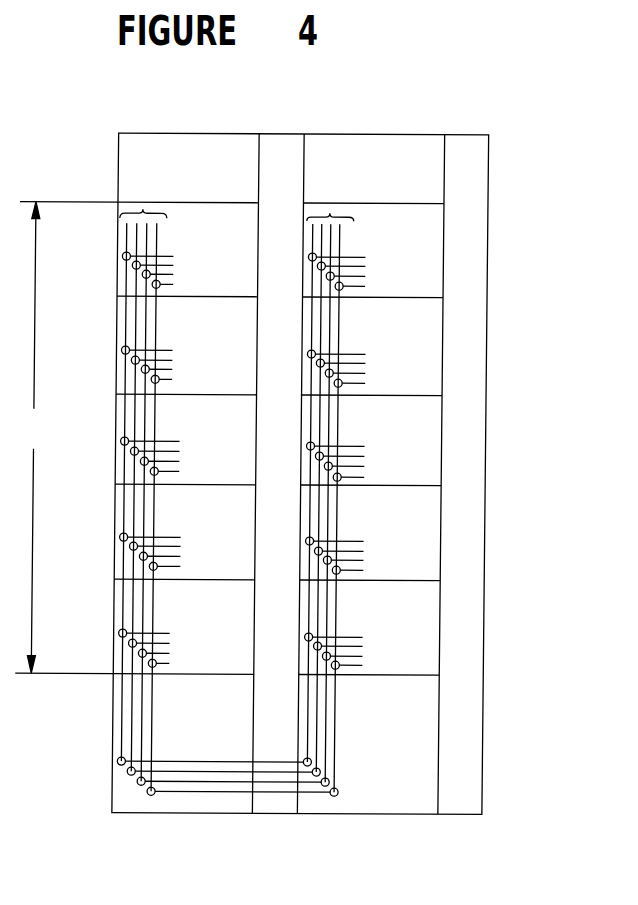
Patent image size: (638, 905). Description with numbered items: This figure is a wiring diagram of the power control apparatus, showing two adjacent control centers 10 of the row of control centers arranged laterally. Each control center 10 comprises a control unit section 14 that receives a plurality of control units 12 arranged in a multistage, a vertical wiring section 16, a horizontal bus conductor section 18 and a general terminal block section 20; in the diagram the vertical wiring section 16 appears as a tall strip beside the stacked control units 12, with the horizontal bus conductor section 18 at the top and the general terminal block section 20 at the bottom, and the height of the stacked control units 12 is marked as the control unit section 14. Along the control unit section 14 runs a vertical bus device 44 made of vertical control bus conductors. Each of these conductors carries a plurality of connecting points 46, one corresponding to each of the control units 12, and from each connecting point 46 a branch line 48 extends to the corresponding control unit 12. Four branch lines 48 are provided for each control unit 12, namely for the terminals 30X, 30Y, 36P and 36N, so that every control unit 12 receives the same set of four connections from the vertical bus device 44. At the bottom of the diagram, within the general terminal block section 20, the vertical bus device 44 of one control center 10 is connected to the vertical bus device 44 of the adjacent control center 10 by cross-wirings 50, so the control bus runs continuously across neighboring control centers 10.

The control center 10 is at (163, 872).
The control unit 12 is at (418, 378).
The control unit section 14 is at (50, 445).
The vertical wiring section 16 is at (293, 270).
The horizontal bus conductor section 18 is at (230, 183).
The general terminal block section 20 is at (215, 728).
The terminal 30X is at (175, 328).
The terminal 30Y is at (179, 344).
The terminal 36P is at (184, 365).
The terminal 36N is at (189, 384).
The vertical bus device 44 is at (327, 188).
The connecting point 46 is at (307, 551).
The branch line 48 is at (191, 352).
The cross-wiring 50 is at (222, 796).